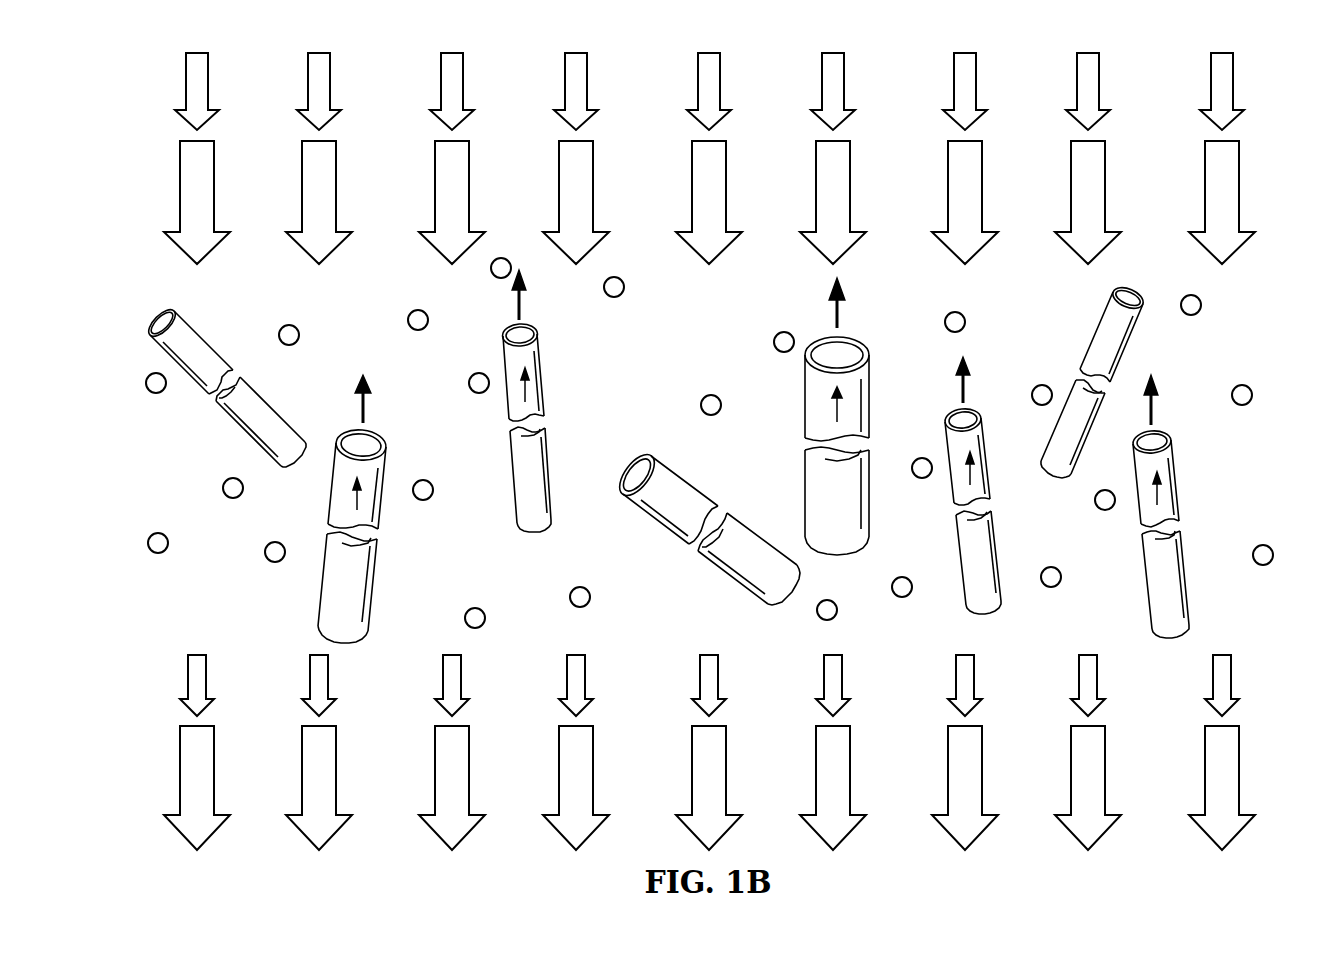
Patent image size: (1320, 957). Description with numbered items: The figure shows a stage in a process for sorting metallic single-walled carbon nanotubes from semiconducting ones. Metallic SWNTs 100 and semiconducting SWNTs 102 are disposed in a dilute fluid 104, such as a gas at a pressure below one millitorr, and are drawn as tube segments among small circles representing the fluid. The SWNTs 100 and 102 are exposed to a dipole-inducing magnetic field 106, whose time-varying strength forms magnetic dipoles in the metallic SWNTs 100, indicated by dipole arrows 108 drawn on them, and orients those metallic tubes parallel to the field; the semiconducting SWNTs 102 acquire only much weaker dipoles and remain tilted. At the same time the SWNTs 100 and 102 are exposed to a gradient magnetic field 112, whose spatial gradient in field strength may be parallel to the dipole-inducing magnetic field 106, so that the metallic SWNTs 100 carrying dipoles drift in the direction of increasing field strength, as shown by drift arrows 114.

The metallic SWNTs 100 is at (320, 577).
The semiconducting SWNTs 102 is at (208, 340).
The dilute fluid 104 is at (289, 325).
The dipole-inducing magnetic field 106 is at (161, 57).
The dipole arrows 108 is at (330, 500).
The gradient magnetic field 112 is at (161, 140).
The drift arrows 114 is at (360, 407).